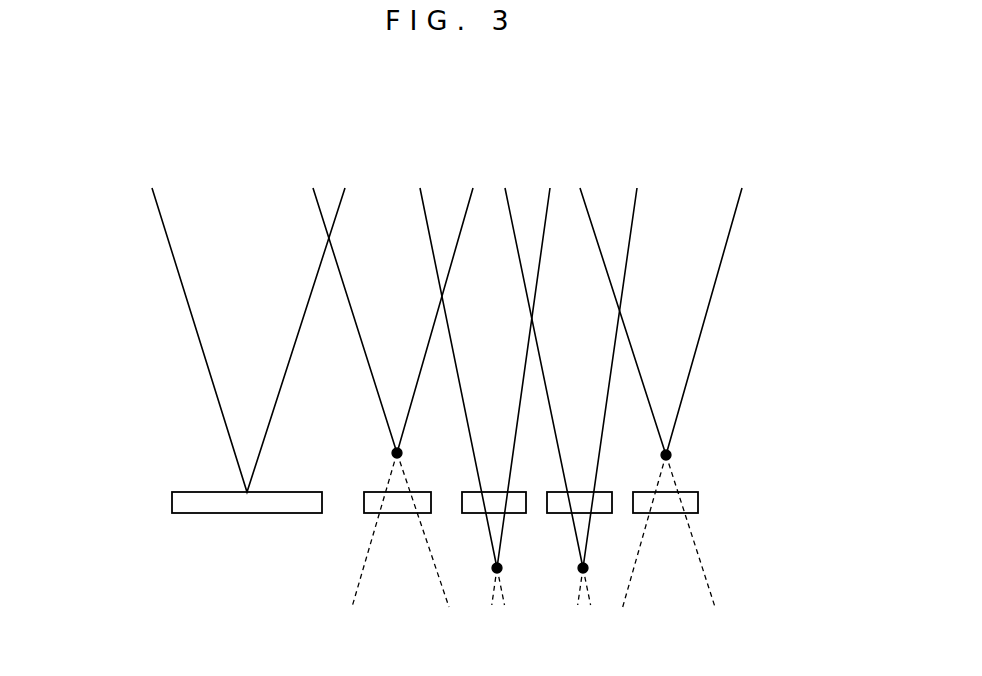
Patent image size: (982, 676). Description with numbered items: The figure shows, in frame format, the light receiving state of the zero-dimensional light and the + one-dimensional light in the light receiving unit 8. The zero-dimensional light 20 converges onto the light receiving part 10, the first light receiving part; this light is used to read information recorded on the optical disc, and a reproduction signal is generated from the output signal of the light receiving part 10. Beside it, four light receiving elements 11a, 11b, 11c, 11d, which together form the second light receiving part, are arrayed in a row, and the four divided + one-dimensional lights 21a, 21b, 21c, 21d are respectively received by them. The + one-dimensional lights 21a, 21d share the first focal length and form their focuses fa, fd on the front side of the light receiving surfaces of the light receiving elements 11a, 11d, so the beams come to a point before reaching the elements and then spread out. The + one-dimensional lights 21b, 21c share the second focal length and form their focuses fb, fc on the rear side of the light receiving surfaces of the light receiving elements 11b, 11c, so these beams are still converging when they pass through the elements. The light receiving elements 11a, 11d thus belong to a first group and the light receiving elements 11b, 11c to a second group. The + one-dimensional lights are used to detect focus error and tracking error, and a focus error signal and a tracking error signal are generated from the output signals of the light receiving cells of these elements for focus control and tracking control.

The light receiving unit 8 is at (292, 572).
The light receiving part 10 is at (185, 492).
The light receiving element 11a is at (372, 492).
The light receiving element 11b is at (467, 492).
The light receiving element 11c is at (555, 492).
The light receiving element 11d is at (640, 492).
The zero-dimensional light 20 is at (177, 273).
The + one-dimensional light 21a is at (371, 372).
The + one-dimensional light 21b is at (432, 257).
The + one-dimensional light 21c is at (627, 263).
The + one-dimensional light 21d is at (691, 370).
The focus fa is at (384, 445).
The focus fb is at (482, 567).
The focus fc is at (594, 567).
The focus fd is at (679, 451).